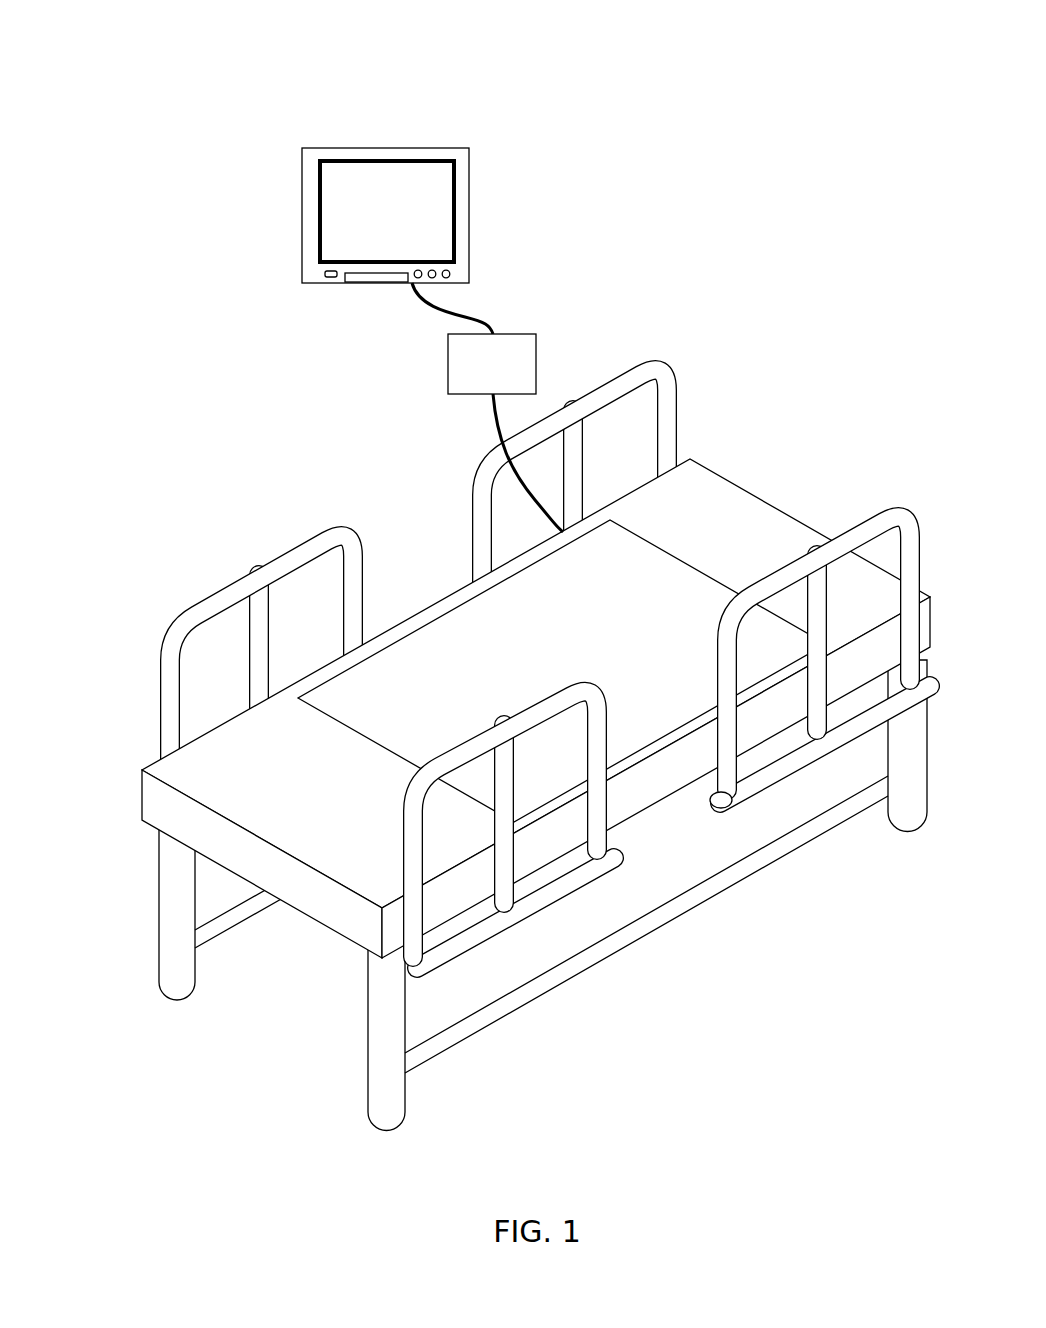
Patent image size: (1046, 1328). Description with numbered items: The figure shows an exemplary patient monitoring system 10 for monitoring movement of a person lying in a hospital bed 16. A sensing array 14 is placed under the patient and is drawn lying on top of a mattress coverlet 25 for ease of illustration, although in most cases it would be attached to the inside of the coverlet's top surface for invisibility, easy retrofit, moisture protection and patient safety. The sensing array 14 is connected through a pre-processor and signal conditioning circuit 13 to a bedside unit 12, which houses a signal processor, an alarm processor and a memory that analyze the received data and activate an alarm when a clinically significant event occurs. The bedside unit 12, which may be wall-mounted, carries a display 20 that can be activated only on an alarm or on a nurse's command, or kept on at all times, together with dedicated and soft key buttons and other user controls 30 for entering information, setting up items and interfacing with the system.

The patient monitoring system 10 is at (492, 569).
The bedside unit 12 is at (386, 184).
The display 20 is at (340, 198).
The user controls 30 is at (458, 273).
The pre-processor and signal conditioning circuit 13 is at (448, 368).
The mattress coverlet 25 is at (492, 743).
The sensing array 14 is at (347, 735).
The hospital bed 16 is at (158, 713).